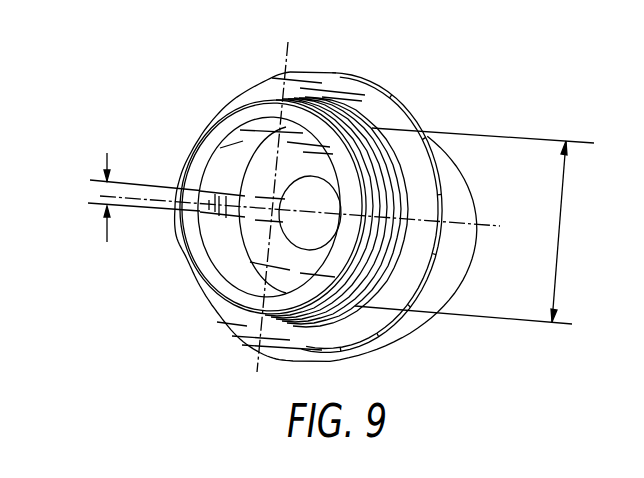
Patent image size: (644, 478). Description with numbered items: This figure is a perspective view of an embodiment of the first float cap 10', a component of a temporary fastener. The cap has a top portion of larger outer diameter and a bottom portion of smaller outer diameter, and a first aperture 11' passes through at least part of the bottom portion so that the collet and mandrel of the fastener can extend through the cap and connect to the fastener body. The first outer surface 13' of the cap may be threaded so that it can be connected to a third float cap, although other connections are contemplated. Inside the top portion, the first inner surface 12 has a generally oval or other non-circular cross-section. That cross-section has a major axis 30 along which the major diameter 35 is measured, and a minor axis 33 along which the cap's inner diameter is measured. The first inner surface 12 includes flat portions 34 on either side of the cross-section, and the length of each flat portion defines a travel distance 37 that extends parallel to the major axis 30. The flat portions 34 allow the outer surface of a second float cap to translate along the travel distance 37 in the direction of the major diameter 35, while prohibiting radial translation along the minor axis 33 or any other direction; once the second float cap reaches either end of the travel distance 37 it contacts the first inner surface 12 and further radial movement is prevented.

The first float cap 10' is at (305, 185).
The major axis 30 is at (288, 61).
The first outer surface 13' is at (318, 207).
The first inner surface 12 is at (223, 165).
The first aperture 11' is at (232, 241).
The flat portions 34 is at (192, 239).
The travel distance 37 is at (107, 153).
The minor axis 33 is at (503, 227).
The major diameter 35 is at (570, 204).